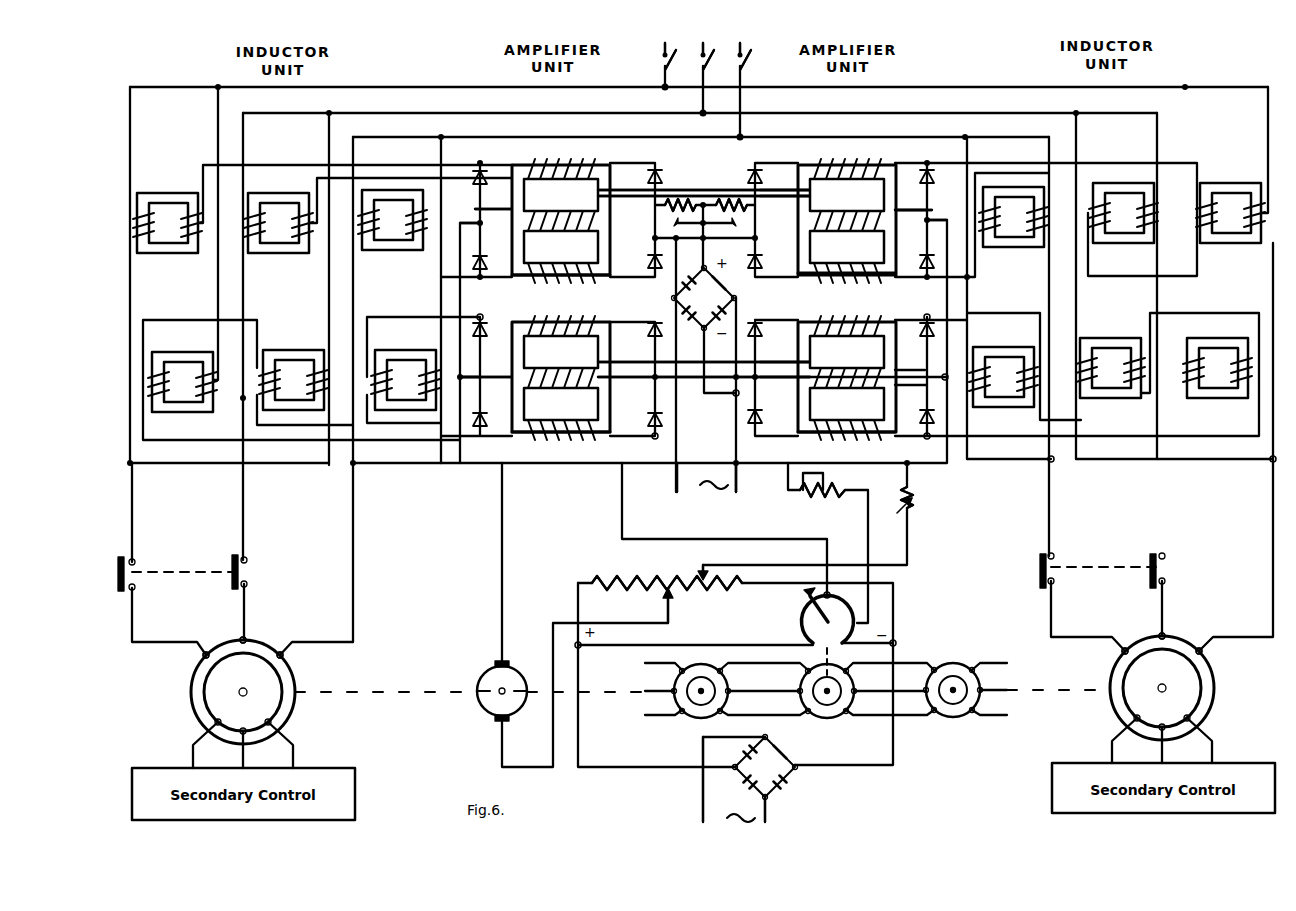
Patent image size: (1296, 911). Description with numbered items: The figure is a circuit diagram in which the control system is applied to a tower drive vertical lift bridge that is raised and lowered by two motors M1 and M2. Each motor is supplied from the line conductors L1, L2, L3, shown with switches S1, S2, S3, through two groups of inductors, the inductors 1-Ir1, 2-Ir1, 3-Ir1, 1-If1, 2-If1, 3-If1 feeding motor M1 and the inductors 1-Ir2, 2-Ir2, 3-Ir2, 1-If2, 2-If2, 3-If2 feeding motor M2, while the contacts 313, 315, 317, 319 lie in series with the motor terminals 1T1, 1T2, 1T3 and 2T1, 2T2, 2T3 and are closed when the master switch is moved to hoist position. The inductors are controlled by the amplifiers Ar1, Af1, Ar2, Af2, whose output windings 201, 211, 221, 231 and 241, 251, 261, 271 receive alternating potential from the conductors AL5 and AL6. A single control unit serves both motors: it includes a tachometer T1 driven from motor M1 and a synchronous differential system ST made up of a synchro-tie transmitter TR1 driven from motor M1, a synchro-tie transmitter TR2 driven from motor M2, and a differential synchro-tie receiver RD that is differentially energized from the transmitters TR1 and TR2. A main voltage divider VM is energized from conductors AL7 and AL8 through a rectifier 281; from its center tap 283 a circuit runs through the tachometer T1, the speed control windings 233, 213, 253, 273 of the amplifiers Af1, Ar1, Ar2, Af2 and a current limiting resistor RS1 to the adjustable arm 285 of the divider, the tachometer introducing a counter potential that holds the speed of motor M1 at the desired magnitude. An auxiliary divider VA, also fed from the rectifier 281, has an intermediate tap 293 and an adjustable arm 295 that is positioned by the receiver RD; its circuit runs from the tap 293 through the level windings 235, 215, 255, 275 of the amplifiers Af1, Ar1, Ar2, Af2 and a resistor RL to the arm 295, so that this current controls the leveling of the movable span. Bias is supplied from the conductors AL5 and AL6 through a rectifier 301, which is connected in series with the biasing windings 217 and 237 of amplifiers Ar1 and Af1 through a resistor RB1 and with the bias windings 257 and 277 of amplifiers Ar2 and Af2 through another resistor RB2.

The output winding 201 is at (571, 168).
The output winding 211 is at (580, 277).
The speed control winding 213 is at (522, 224).
The level winding 215 is at (601, 222).
The biasing winding 217 is at (601, 204).
The output winding 221 is at (575, 321).
The output winding 231 is at (578, 434).
The speed control winding 233 is at (522, 386).
The level winding 235 is at (601, 380).
The biasing winding 237 is at (601, 368).
The output winding 241 is at (851, 167).
The output winding 251 is at (840, 276).
The speed control winding 253 is at (885, 212).
The level winding 255 is at (805, 226).
The bias winding 257 is at (805, 207).
The output winding 261 is at (845, 321).
The output winding 271 is at (853, 434).
The speed control winding 273 is at (886, 363).
The level winding 275 is at (805, 378).
The bias winding 277 is at (805, 360).
The rectifier 281 is at (775, 774).
The center tap 283 is at (672, 598).
The adjustable arm 285 is at (700, 573).
The intermediate tap 293 is at (813, 593).
The adjustable arm 295 is at (806, 597).
The rectifier 301 is at (704, 298).
The contact 313 is at (138, 586).
The contact 315 is at (247, 572).
The contact 317 is at (1040, 577).
The contact 319 is at (1165, 567).
The amplifier Ar1 is at (480, 210).
The amplifier Af1 is at (522, 376).
The amplifier Ar2 is at (925, 210).
The amplifier Af2 is at (886, 382).
The resistor RB1 is at (680, 197).
The resistor RB2 is at (731, 197).
The resistor RL is at (828, 483).
The current limiting resistor RS1 is at (893, 508).
The main voltage divider VM is at (625, 578).
The auxiliary divider VA is at (842, 608).
The differential synchro-tie receiver RD is at (847, 680).
The synchronous differential system ST is at (877, 738).
The synchro-tie transmitter TR1 is at (677, 669).
The synchro-tie transmitter TR2 is at (948, 664).
The tachometer T1 is at (480, 676).
The motor M1 is at (323, 721).
The motor M2 is at (1248, 698).
The motor terminal 1T1 is at (203, 656).
The motor terminal 1T2 is at (240, 637).
The motor terminal 1T3 is at (284, 656).
The motor terminal 2T1 is at (1122, 652).
The motor terminal 2T2 is at (1165, 636).
The motor terminal 2T3 is at (1203, 652).
The conductor L1 is at (662, 49).
The conductor L2 is at (700, 49).
The conductor L3 is at (737, 49).
The line switch S1 is at (662, 68).
The line switch S2 is at (700, 68).
The line switch S3 is at (737, 68).
The conductor AL5 is at (738, 484).
The conductor AL6 is at (675, 484).
The conductor AL7 is at (768, 810).
The conductor AL8 is at (700, 810).
The inductor 1-Ir1 is at (155, 192).
The inductor 2-Ir1 is at (267, 192).
The inductor 3-Ir1 is at (376, 252).
The inductor 1-If1 is at (172, 345).
The inductor 2-If1 is at (285, 345).
The inductor 3-If1 is at (396, 345).
The inductor 1-Ir2 is at (990, 247).
The inductor 2-Ir2 is at (1108, 183).
The inductor 3-Ir2 is at (1214, 190).
The inductor 1-If2 is at (992, 340).
The inductor 2-If2 is at (1103, 338).
The inductor 3-If2 is at (1207, 345).